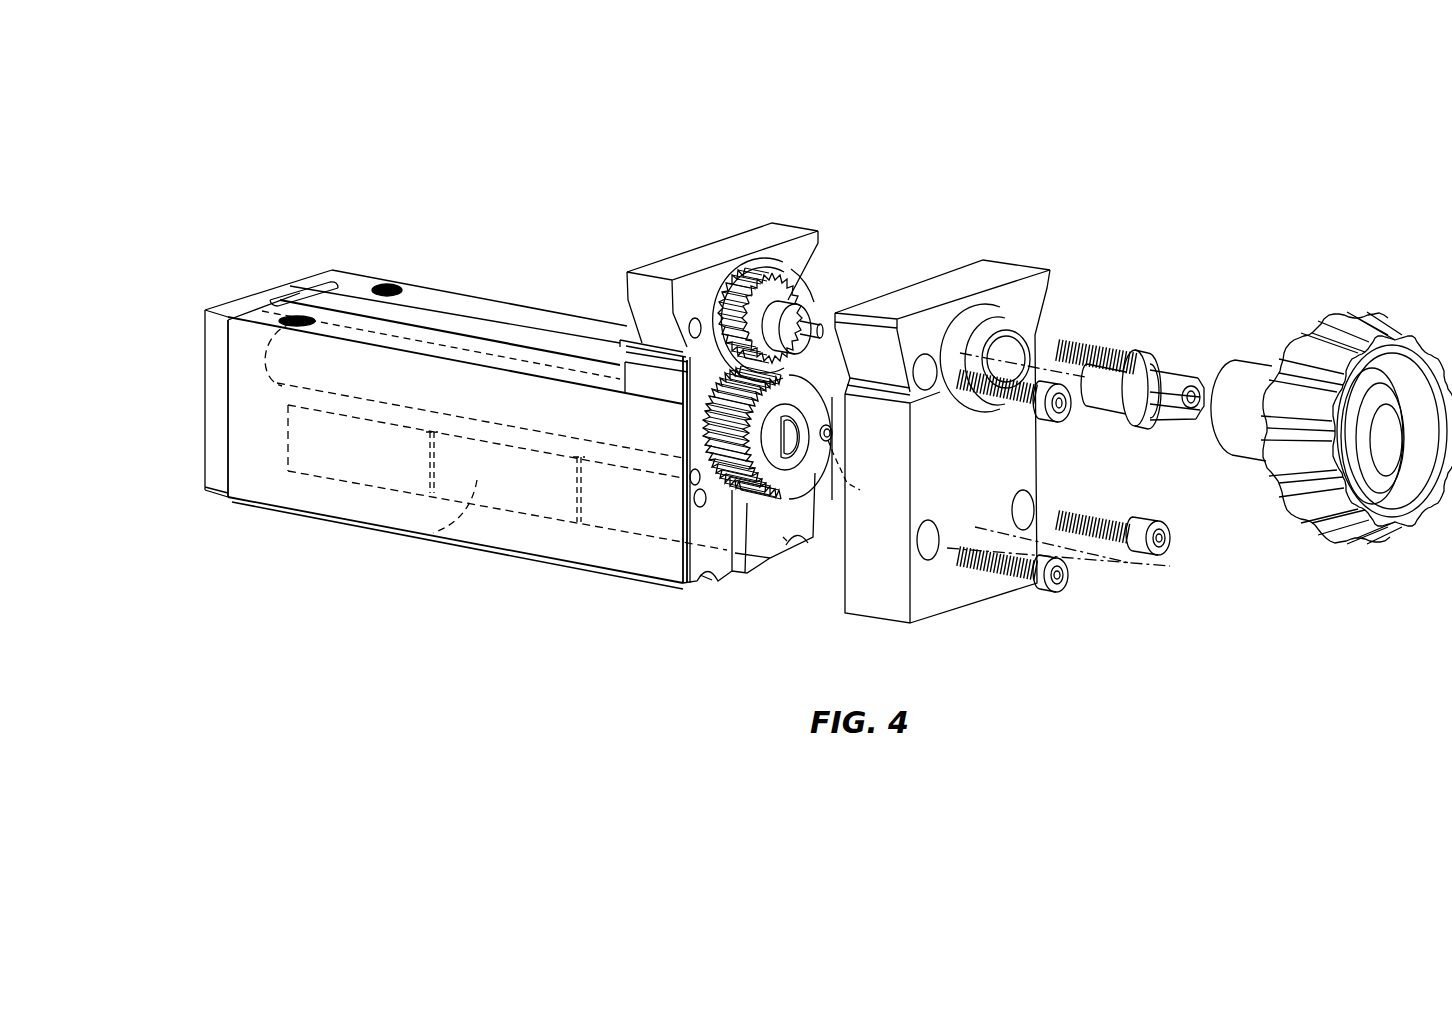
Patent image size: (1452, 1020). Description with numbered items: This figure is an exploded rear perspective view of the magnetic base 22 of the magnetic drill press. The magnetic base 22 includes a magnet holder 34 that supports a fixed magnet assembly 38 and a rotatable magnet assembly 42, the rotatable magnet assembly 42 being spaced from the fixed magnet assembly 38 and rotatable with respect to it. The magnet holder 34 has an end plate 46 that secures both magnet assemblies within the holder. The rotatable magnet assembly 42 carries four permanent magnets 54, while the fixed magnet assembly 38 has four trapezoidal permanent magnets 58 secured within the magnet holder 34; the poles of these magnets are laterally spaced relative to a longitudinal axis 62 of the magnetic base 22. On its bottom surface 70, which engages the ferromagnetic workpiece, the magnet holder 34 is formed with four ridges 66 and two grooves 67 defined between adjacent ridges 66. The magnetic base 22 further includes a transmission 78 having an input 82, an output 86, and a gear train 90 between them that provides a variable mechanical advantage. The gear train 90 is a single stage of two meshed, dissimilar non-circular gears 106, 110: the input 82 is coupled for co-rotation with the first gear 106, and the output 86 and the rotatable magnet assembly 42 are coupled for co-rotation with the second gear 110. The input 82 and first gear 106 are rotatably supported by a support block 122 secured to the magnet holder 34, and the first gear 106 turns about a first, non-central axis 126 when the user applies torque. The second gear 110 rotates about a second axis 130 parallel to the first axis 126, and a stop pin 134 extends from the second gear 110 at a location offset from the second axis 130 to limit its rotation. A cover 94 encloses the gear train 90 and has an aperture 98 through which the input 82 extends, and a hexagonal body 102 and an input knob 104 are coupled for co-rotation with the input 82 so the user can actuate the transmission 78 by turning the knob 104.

The magnetic base 22 is at (288, 206).
The magnet holder 34 is at (252, 352).
The end plate 46 is at (218, 402).
The rotatable magnet assembly 42 is at (251, 293).
The permanent magnets 54 is at (614, 372).
The fixed magnet assembly 38 is at (256, 448).
The trapezoidal permanent magnets 58 is at (573, 610).
The bottom surface 70 is at (289, 511).
The support block 122 is at (680, 263).
The first non-circular gear 106 is at (798, 266).
The transmission input 82 is at (812, 323).
The second non-circular gear 110 is at (710, 428).
The stop pin 134 is at (834, 437).
The second axis 130 is at (865, 474).
The transmission output 86 is at (748, 577).
The ridges 66 is at (800, 545).
The grooves 67 is at (787, 540).
The gear train 90 is at (908, 232).
The cover 94 is at (1033, 452).
The aperture 98 is at (1043, 328).
The longitudinal axis 62 is at (1107, 552).
The first axis 126 is at (1070, 370).
The hexagonal body 102 is at (1174, 384).
The input knob 104 is at (1326, 344).
The transmission 78 is at (1061, 178).